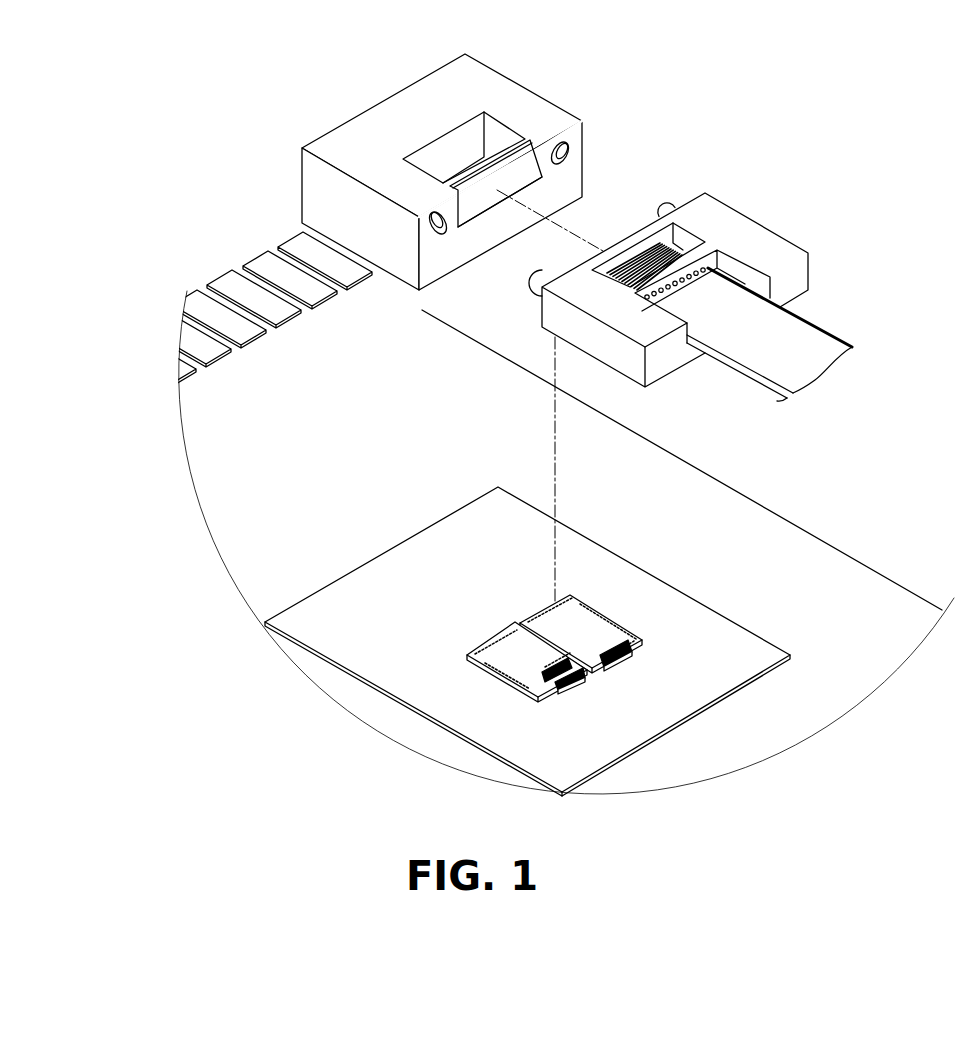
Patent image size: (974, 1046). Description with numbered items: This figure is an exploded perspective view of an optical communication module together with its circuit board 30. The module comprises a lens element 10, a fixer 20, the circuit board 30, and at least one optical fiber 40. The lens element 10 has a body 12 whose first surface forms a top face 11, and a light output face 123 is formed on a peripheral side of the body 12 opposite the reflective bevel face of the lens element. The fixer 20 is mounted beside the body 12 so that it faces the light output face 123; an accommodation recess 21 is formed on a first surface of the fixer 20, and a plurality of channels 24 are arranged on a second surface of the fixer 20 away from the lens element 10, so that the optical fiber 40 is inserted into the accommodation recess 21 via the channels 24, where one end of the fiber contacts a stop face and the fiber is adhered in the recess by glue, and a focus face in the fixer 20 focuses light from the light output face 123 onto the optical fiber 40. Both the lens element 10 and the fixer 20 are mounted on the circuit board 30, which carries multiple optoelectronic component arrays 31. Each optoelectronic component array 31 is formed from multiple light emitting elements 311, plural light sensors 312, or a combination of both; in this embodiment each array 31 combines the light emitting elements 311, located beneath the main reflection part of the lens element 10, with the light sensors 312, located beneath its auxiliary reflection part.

The lens element 10 is at (300, 120).
The top face 11 is at (468, 143).
The body 12 is at (518, 165).
The light output face 123 is at (477, 203).
The fixer 20 is at (718, 220).
The accommodation recess 21 is at (688, 238).
The channel 24 is at (718, 243).
The optical fiber 40 is at (808, 347).
The circuit board 30 is at (275, 495).
The optoelectronic component array 31 is at (598, 637).
The light sensor 312 is at (513, 688).
The light emitting element 311 is at (628, 665).